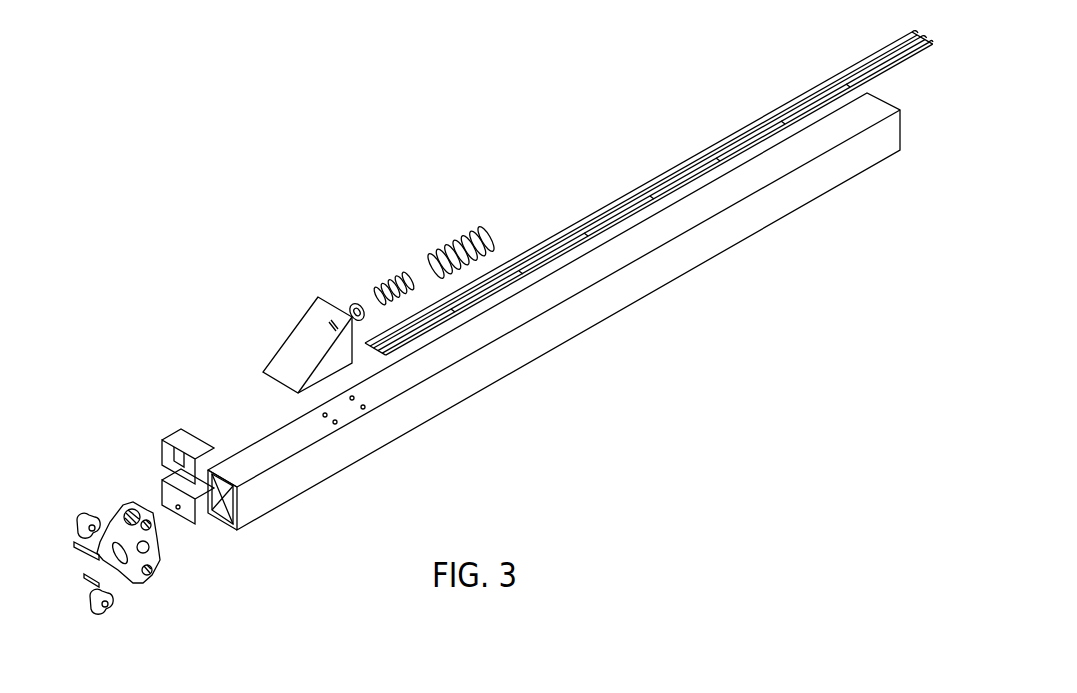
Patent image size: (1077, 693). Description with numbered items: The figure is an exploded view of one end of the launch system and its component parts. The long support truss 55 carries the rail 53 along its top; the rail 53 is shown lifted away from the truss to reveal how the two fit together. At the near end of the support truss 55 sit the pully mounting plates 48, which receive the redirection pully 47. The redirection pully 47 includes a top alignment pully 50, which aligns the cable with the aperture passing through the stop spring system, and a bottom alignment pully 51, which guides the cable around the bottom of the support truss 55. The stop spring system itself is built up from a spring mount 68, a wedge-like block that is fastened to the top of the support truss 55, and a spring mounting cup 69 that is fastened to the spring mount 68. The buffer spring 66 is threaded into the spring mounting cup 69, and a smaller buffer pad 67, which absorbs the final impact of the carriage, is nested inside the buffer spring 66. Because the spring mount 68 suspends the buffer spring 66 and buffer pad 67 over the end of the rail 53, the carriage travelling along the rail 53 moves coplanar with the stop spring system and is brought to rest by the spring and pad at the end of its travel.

The redirection pully 47 is at (158, 576).
The pully mounting plates 48 is at (161, 477).
The top alignment pully 50 is at (75, 511).
The bottom alignment pully 51 is at (119, 614).
The rail 53 is at (764, 109).
The support truss 55 is at (762, 230).
The buffer spring 66 is at (447, 241).
The buffer pad 67 is at (384, 279).
The spring mount 68 is at (282, 337).
The spring mounting cup 69 is at (347, 298).